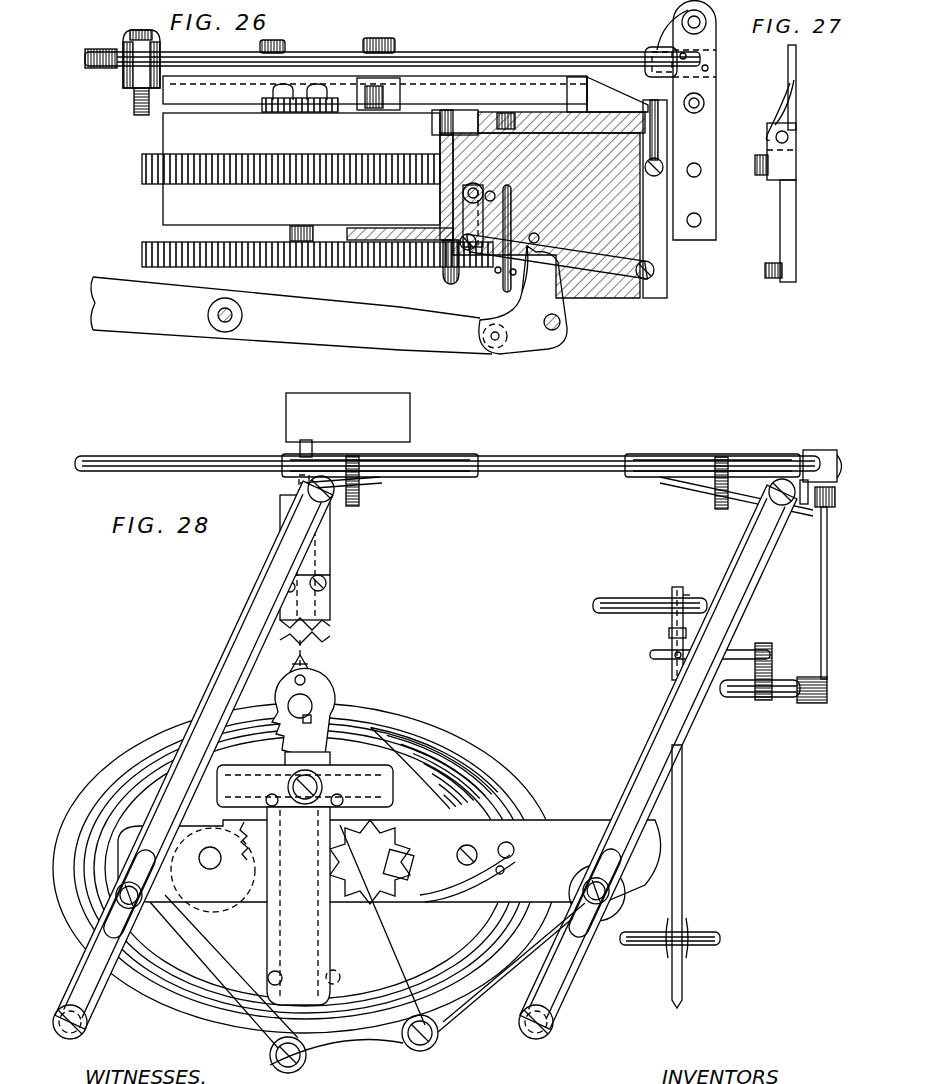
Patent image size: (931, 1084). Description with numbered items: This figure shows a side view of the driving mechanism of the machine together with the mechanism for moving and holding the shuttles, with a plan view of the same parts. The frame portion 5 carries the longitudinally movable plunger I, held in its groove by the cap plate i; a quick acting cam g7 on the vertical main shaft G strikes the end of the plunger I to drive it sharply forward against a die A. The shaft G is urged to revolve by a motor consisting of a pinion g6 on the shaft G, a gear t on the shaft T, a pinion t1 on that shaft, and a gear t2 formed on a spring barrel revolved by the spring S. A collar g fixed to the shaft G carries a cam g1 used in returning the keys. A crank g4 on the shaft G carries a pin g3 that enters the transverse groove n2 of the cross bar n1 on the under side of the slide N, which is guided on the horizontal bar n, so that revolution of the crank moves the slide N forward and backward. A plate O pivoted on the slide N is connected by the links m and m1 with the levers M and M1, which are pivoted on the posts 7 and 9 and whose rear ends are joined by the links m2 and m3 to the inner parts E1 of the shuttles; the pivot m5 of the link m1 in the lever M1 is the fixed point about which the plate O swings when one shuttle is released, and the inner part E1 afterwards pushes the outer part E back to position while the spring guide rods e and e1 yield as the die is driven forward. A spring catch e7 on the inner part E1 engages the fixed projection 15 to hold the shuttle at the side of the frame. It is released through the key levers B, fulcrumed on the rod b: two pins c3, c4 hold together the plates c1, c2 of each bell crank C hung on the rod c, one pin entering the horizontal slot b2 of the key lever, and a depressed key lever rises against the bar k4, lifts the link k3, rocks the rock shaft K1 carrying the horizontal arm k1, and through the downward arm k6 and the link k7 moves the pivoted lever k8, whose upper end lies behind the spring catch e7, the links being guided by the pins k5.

In FIG. 26, the lever M1 is at (487, 60).
In FIG. 28, the lever M1 is at (658, 757).
In FIG. 26, the link m1 is at (322, 62).
In FIG. 28, the link m1 is at (511, 967).
In FIG. 26, the cap plate i is at (582, 94).
In FIG. 26, the transverse groove n2 is at (390, 74).
In FIG. 28, the transverse groove n2 is at (390, 787).
In FIG. 26, the cross bar n1 is at (393, 90).
In FIG. 28, the cross bar n1 is at (305, 786).
In FIG. 26, the pin g3 is at (372, 102).
In FIG. 26, the crank g4 is at (385, 104).
In FIG. 26, the cam g1 is at (455, 122).
In FIG. 26, the plunger I is at (549, 118).
In FIG. 28, the plunger I is at (300, 647).
In FIG. 26, the quick acting cam g7 is at (505, 114).
In FIG. 28, the quick acting cam g7 is at (313, 657).
In FIG. 26, the frame portion 5 is at (546, 215).
In FIG. 26, the gear t2 is at (222, 158).
In FIG. 28, the gear t2 is at (520, 767).
In FIG. 26, the gear t is at (407, 257).
In FIG. 28, the gear t is at (305, 868).
In FIG. 26, the link k3 is at (511, 215).
In FIG. 26, the arm k6 is at (463, 217).
In FIG. 26, the main shaft G is at (477, 176).
In FIG. 28, the main shaft G is at (304, 692).
In FIG. 26, the rock shaft K1 is at (476, 190).
In FIG. 28, the rock shaft K1 is at (735, 688).
In FIG. 26, the horizontal arm k1 is at (496, 193).
In FIG. 28, the horizontal arm k1 is at (762, 657).
In FIG. 26, the link k7 is at (577, 258).
In FIG. 27, the link k7 is at (775, 262).
In FIG. 28, the link k7 is at (825, 592).
In FIG. 26, the pin c3 is at (540, 236).
In FIG. 28, the pin c3 is at (687, 632).
In FIG. 26, the pinion g6 is at (453, 262).
In FIG. 26, the guide pins k5 is at (512, 273).
In FIG. 28, the guide pins k5 is at (805, 698).
In FIG. 26, the pivoted lever k8 is at (643, 207).
In FIG. 27, the pivoted lever k8 is at (790, 222).
In FIG. 28, the pivoted lever k8 is at (825, 520).
In FIG. 26, the spring guide rod e is at (706, 21).
In FIG. 28, the spring guide rod e is at (577, 460).
In FIG. 26, the fixed projection 15 is at (702, 70).
In FIG. 28, the fixed projection 15 is at (822, 466).
In FIG. 26, the spring guide rod e1 is at (704, 103).
In FIG. 26, the spring catch e7 is at (651, 43).
In FIG. 28, the spring catch e7 is at (328, 501).
In FIG. 26, the key lever B is at (291, 315).
In FIG. 28, the key lever B is at (680, 842).
In FIG. 26, the bell crank lever C is at (523, 300).
In FIG. 28, the bell crank lever C is at (672, 630).
In FIG. 26, the plate c1 is at (557, 287).
In FIG. 28, the plate c1 is at (672, 597).
In FIG. 26, the cylindrical rod c is at (561, 323).
In FIG. 28, the cylindrical rod c is at (623, 602).
In FIG. 26, the pin c4 is at (495, 341).
In FIG. 26, the slot b2 is at (505, 337).
In FIG. 28, the inner part of shuttle E1 is at (447, 460).
In FIG. 28, the die A is at (300, 447).
In FIG. 28, the outer part of shuttle E is at (352, 456).
In FIG. 28, the bar k4 is at (733, 652).
In FIG. 28, the plate c2 is at (684, 597).
In FIG. 28, the link m2 is at (380, 487).
In FIG. 28, the link m3 is at (735, 485).
In FIG. 28, the lever M is at (194, 755).
In FIG. 28, the post 7 is at (86, 1030).
In FIG. 28, the post 9 is at (552, 1028).
In FIG. 28, the spring S is at (435, 767).
In FIG. 28, the shaft T is at (210, 869).
In FIG. 28, the pinion t1 is at (244, 832).
In FIG. 28, the guide bar n is at (323, 610).
In FIG. 28, the collar g is at (320, 680).
In FIG. 28, the slide N is at (273, 955).
In FIG. 28, the link m is at (224, 971).
In FIG. 28, the pivot m5 is at (607, 900).
In FIG. 28, the plate O is at (270, 1020).
In FIG. 28, the cylindrical rod b is at (690, 938).